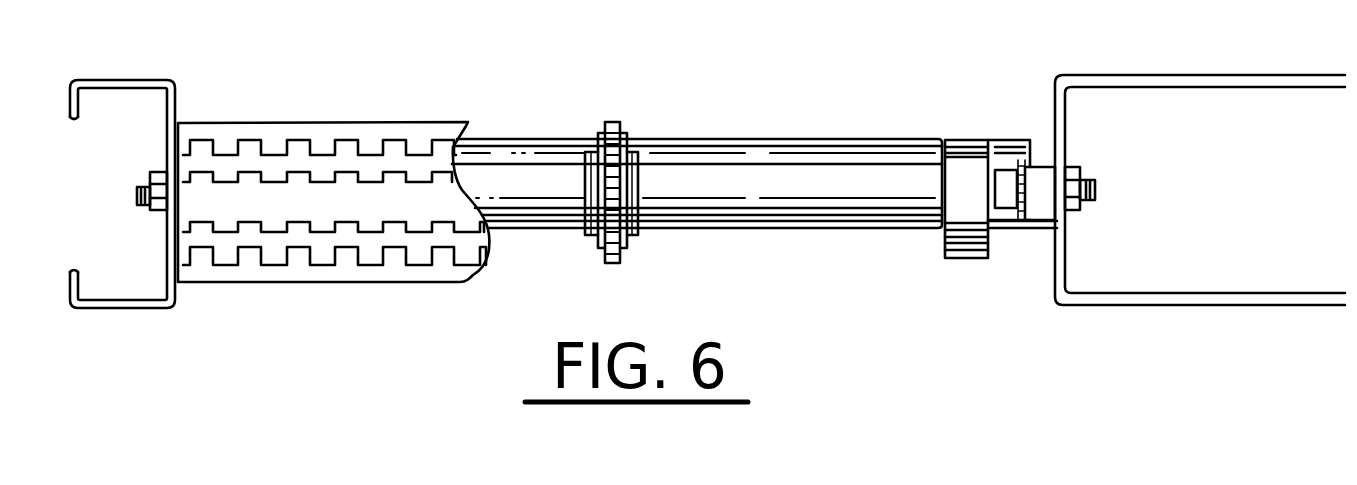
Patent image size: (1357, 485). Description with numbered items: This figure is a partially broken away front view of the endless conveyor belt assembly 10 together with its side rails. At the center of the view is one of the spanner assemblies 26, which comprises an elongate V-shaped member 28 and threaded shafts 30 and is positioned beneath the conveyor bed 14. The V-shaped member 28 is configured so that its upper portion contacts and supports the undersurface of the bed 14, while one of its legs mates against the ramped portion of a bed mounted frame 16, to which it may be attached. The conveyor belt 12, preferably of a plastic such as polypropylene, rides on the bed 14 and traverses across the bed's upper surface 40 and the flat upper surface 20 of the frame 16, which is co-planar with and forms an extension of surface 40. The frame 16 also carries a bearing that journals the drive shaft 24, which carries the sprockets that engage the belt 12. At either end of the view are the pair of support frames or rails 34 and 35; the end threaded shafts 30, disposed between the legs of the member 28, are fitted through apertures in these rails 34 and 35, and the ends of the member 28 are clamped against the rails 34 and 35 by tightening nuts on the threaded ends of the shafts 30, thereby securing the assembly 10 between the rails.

The endless conveyor belt assembly 10 is at (477, 78).
The endless conveyor belt 12 is at (360, 122).
The conveyor bed 14 is at (845, 138).
The bed mounted frame 16 is at (943, 240).
The flat upper surface 20 is at (962, 258).
The drive shaft 24 is at (713, 199).
The spanner assembly 26 is at (1040, 230).
The V-shaped member 28 is at (1038, 165).
The threaded shaft 30 is at (138, 193).
The support rail 34 is at (1153, 76).
The support rail 35 is at (110, 80).
The upper surface 40 is at (698, 138).